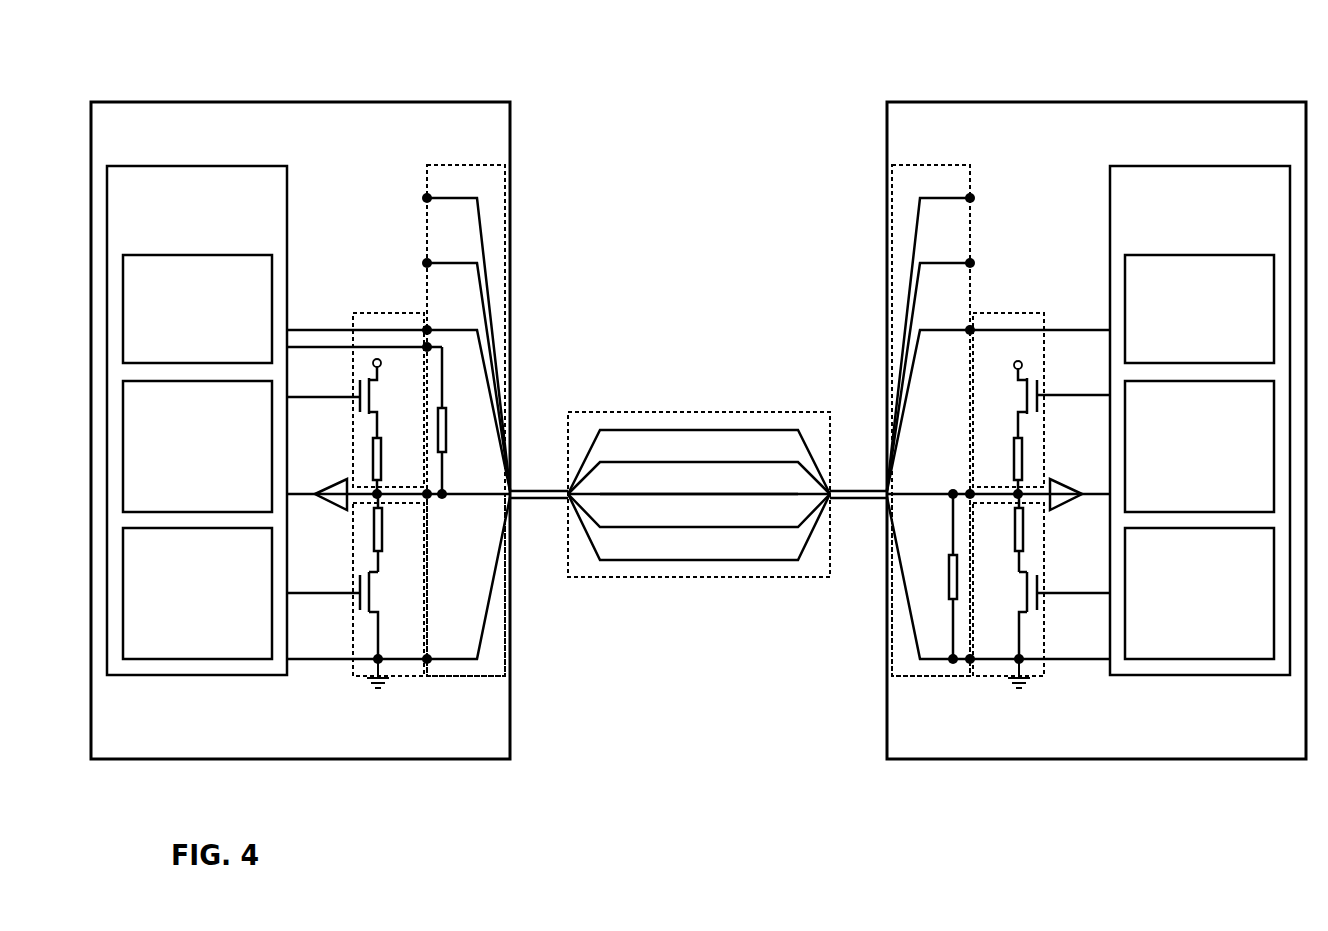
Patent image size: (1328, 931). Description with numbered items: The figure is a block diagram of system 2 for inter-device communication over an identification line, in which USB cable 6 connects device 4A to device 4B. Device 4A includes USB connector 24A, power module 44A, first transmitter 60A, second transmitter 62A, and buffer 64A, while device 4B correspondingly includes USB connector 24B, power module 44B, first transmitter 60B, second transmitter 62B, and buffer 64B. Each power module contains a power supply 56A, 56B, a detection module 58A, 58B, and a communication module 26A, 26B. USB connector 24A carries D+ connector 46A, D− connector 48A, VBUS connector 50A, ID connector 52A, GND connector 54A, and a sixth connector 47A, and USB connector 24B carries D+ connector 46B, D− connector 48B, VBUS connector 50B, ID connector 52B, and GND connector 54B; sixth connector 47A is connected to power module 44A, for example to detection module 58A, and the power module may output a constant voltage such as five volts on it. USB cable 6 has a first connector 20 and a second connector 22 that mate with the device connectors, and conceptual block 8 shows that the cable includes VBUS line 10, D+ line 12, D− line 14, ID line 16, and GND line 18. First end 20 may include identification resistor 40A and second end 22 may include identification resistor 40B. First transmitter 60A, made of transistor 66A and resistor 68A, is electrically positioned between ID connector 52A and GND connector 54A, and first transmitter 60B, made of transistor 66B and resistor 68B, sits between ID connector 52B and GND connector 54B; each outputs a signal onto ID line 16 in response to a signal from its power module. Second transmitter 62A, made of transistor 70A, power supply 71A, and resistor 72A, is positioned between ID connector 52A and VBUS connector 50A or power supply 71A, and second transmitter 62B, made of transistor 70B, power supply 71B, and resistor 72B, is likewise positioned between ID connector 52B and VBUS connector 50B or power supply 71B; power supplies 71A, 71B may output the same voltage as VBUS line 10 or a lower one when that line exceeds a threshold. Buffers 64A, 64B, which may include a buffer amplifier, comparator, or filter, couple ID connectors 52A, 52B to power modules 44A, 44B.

The system 2 is at (1208, 46).
The device 4A is at (300, 430).
The device 4B is at (1096, 430).
The power module 44A is at (197, 420).
The power module 44B is at (1200, 420).
The power supply 56A is at (197, 309).
The power supply 56B is at (1199, 309).
The detection module 58A is at (197, 446).
The detection module 58B is at (1199, 446).
The communication module 26A is at (197, 593).
The communication module 26B is at (1199, 593).
The USB connector 24A is at (489, 163).
The USB connector 24B is at (935, 164).
The D+ connector 46A is at (425, 194).
The D+ connector 46B is at (972, 196).
The D− connector 48A is at (425, 259).
The D− connector 48B is at (972, 261).
The VBUS connector 50A is at (424, 329).
The VBUS connector 50B is at (973, 329).
The sixth connector 47A is at (443, 348).
The identification resistor 40A is at (446, 453).
The identification resistor 40B is at (951, 555).
The ID connector 52A is at (431, 496).
The ID connector 52B is at (967, 492).
The GND connector 54A is at (430, 657).
The GND connector 54B is at (972, 657).
The first transmitter 60A is at (413, 678).
The first transmitter 60B is at (990, 678).
The second transmitter 62A is at (372, 312).
The second transmitter 62B is at (1025, 312).
The buffer 64A is at (333, 485).
The buffer 64B is at (1082, 468).
The transistor 66A is at (357, 601).
The transistor 66B is at (1040, 601).
The resistor 68A is at (383, 552).
The resistor 68B is at (1015, 552).
The transistor 70A is at (357, 393).
The transistor 70B is at (1040, 393).
The power supply 71A is at (373, 360).
The power supply 71B is at (1022, 361).
The resistor 72A is at (382, 440).
The resistor 72B is at (1014, 440).
The first connector 20 is at (516, 491).
The second connector 22 is at (884, 490).
The conceptual block 8 is at (806, 411).
The USB cable 6 is at (836, 499).
The VBUS line 10 is at (686, 428).
The D+ line 12 is at (686, 460).
The D− line 14 is at (686, 493).
The ID line 16 is at (686, 526).
The GND line 18 is at (686, 559).